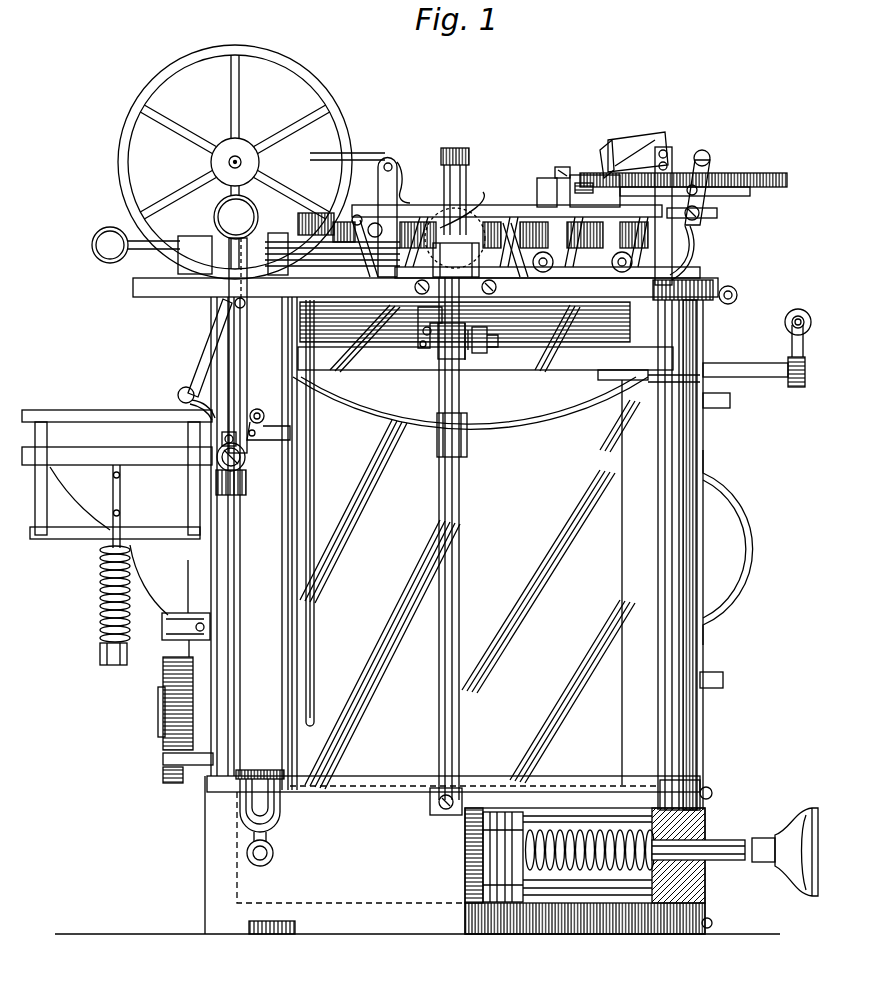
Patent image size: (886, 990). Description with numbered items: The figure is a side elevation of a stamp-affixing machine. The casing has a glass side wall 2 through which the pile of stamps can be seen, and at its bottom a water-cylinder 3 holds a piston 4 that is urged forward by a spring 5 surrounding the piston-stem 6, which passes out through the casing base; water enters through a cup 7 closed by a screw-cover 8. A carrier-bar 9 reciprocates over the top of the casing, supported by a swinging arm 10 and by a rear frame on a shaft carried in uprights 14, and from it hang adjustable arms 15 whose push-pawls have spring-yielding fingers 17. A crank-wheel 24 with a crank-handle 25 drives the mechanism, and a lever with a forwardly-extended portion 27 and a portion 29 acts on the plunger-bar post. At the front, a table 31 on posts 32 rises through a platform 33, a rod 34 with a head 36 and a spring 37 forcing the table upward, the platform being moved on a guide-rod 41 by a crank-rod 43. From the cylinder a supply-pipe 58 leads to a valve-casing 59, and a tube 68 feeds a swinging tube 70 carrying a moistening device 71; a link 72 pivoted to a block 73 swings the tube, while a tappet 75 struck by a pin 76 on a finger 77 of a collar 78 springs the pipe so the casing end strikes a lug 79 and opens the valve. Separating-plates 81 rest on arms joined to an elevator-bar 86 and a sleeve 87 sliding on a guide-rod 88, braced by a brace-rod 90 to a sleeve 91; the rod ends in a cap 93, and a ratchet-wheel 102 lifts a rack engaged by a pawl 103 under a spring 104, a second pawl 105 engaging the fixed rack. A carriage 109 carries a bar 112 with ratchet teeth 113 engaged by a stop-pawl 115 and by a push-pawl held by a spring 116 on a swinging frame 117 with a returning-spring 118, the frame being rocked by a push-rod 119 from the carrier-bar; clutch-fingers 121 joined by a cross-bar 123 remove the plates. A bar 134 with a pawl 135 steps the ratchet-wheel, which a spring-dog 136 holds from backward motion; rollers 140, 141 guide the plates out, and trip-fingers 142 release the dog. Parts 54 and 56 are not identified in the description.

The side wall 2 is at (470, 547).
The water-cylinder 3 is at (540, 912).
The piston 4 is at (467, 885).
The spring 5 is at (628, 866).
The piston-stem 6 is at (720, 848).
The cup 7 is at (282, 811).
The screw-cover 8 is at (267, 771).
The carrier-bar 9 is at (510, 222).
The swinging arm 10 is at (377, 185).
The uprights 14 is at (672, 155).
The arms 15 is at (600, 268).
The spring-yielding finger 17 is at (632, 268).
The crank-wheel 24 is at (318, 120).
The crank-handle 25 is at (236, 217).
The forwardly-extended portion of lever 27 is at (380, 152).
The lever portion 29 is at (469, 198).
The table 31 is at (130, 412).
The posts 32 is at (190, 496).
The platform 33 is at (147, 443).
The rod 34 is at (112, 492).
The head 36 is at (100, 655).
The spring 37 is at (100, 604).
The guide-rod 41 is at (235, 689).
The crank-rod 43 is at (216, 298).
The spoke 54 is at (204, 207).
The knob 56 is at (92, 248).
The supply-pipe 58 is at (282, 551).
The valve-casing 59 is at (328, 270).
The tube 68 is at (314, 609).
The tube 70 is at (208, 355).
The moistening device 71 is at (186, 402).
The link 72 is at (248, 352).
The block 73 is at (245, 305).
The tappet 75 is at (268, 397).
The pin 76 is at (252, 445).
The finger 77 is at (300, 462).
The collar 78 is at (241, 487).
The lug 79 is at (355, 268).
The separating-plates 81 is at (596, 340).
The elevator-bar 86 is at (543, 370).
The sleeve 87 is at (462, 360).
The guide-rod 88 is at (458, 624).
The brace-rod 90 is at (543, 421).
The sleeve 91 is at (437, 446).
The cap 93 is at (470, 160).
The ratchet-wheel 102 is at (436, 220).
The pawl 103 is at (488, 360).
The spring 104 is at (492, 345).
The pawl 105 is at (433, 345).
The carriage 109 is at (586, 180).
The bar 112 is at (730, 192).
The teeth 113 is at (738, 180).
The stop-pawl 115 is at (606, 156).
The spring 116 is at (642, 140).
The swinging frame 117 is at (712, 172).
The returning-spring 118 is at (680, 262).
The push-rod 119 is at (706, 218).
The clutch-finger 121 is at (545, 178).
The cross-bar 123 is at (564, 167).
The bar 134 is at (404, 160).
The pawl 135 is at (472, 195).
The spring-dog 136 is at (552, 268).
The roller 140 is at (737, 294).
The roller 141 is at (800, 310).
The trip-fingers 142 is at (526, 241).